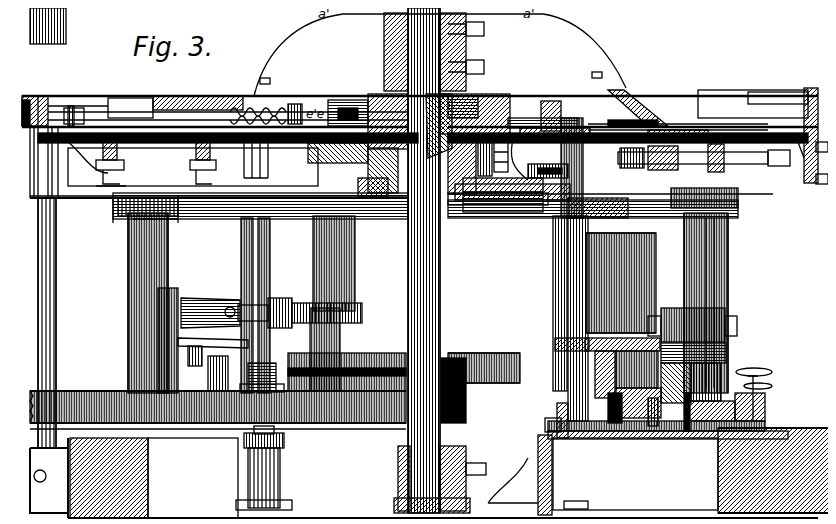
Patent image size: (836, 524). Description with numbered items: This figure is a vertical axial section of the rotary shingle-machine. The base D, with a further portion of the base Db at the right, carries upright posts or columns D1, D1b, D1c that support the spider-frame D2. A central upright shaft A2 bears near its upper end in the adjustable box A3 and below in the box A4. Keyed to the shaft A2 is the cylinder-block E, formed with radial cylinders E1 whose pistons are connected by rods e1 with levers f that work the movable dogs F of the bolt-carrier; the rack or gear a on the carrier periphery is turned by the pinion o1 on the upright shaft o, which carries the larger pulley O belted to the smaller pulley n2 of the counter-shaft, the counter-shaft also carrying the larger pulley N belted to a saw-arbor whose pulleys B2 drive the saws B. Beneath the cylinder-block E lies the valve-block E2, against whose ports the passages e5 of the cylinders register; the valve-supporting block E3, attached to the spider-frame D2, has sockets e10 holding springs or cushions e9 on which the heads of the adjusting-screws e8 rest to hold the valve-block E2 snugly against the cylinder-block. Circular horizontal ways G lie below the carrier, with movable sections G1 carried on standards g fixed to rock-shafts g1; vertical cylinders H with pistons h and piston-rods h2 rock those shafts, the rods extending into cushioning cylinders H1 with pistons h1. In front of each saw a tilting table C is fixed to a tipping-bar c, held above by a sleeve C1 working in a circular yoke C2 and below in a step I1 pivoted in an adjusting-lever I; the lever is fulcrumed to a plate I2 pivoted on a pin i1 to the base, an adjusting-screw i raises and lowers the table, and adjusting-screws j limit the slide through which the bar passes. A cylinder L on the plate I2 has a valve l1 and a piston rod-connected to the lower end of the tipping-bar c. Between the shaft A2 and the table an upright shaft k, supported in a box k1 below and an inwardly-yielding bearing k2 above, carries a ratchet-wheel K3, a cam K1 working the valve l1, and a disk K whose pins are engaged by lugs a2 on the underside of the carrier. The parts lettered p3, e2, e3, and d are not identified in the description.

The post p3 is at (58, 12).
The cylinder-block E is at (480, 86).
The rods e1 is at (130, 108).
The levers f is at (66, 98).
The pinion o1 is at (20, 90).
The rack or gear a is at (34, 88).
The spring e2 is at (262, 98).
The collar e3 is at (288, 96).
The cylinders E1 is at (340, 92).
The movable dogs F is at (630, 80).
The saws B is at (706, 108).
The tilting tables C is at (662, 124).
The lugs a2 is at (606, 112).
The post d is at (796, 128).
The circular yokes C2 is at (740, 148).
The sleeves C1 is at (640, 165).
The circular horizontal ways G is at (119, 162).
The movable sections of circular ways G1 is at (196, 132).
The valve-supporting block E3 is at (258, 150).
The passage e5 is at (338, 165).
The springs or cushions e9 is at (374, 198).
The upright shaft A2 is at (432, 290).
The disk K is at (549, 120).
The valve-block E2 is at (484, 146).
The adjusting-screws e8 is at (508, 150).
The sockets e10 is at (525, 157).
The inwardly-yielding bearing k2 is at (548, 163).
The adjustable box A3 is at (478, 196).
The spider-frame D2 is at (540, 200).
The ratchet-wheel K3 is at (565, 214).
The upright shafts k is at (560, 252).
The upright shaft o is at (48, 270).
The upright posts or columns D1 is at (160, 250).
The upright posts or columns D1b is at (720, 240).
The upright posts or columns D1c is at (305, 262).
The tipping-bars c is at (706, 280).
The standards g is at (233, 240).
The rock-shafts g1 is at (282, 318).
The vertical cylinders H is at (271, 373).
The pistons h is at (213, 356).
The pistons h1 is at (215, 373).
The larger pulley N is at (385, 350).
The pulleys B2 is at (621, 283).
The cam K1 is at (555, 339).
The valve l1 is at (640, 326).
The adjusting-screws j is at (729, 318).
The cylinders L is at (607, 369).
The box k1 is at (547, 400).
The pins i1 is at (712, 382).
The adjusting-screws i is at (757, 408).
The larger pulley O is at (84, 386).
The base D is at (193, 478).
The base Db is at (635, 474).
The cylinders H1 is at (276, 466).
The piston-rods h2 is at (276, 438).
The box A4 is at (390, 468).
The smaller pulley n2 is at (458, 417).
The plates I2 is at (628, 432).
The adjusting-levers I is at (652, 432).
The steps I1 is at (688, 432).